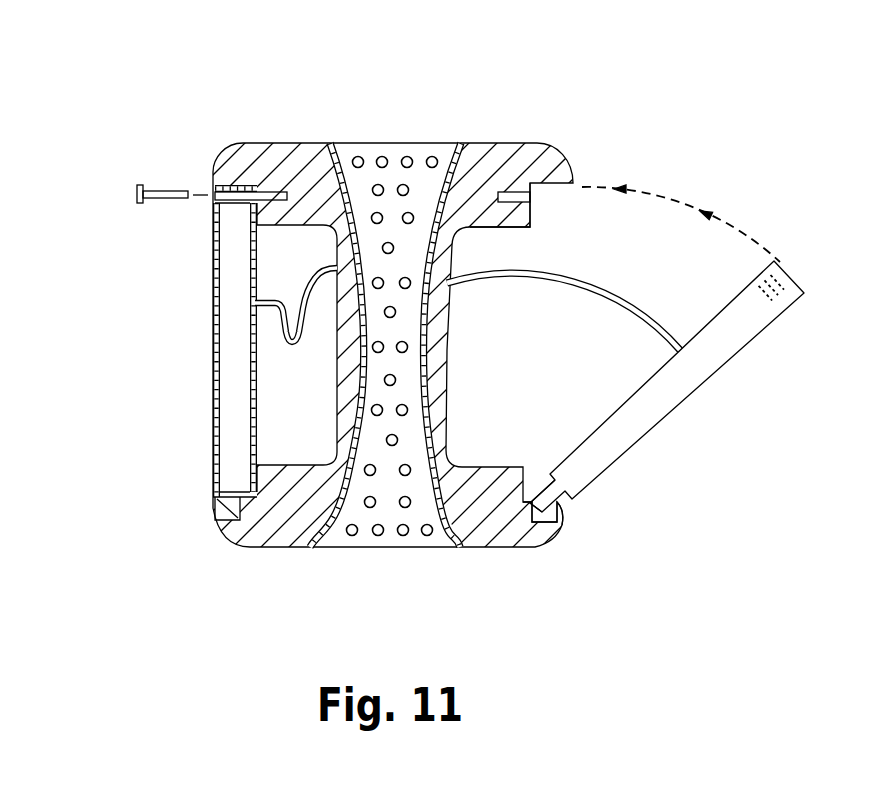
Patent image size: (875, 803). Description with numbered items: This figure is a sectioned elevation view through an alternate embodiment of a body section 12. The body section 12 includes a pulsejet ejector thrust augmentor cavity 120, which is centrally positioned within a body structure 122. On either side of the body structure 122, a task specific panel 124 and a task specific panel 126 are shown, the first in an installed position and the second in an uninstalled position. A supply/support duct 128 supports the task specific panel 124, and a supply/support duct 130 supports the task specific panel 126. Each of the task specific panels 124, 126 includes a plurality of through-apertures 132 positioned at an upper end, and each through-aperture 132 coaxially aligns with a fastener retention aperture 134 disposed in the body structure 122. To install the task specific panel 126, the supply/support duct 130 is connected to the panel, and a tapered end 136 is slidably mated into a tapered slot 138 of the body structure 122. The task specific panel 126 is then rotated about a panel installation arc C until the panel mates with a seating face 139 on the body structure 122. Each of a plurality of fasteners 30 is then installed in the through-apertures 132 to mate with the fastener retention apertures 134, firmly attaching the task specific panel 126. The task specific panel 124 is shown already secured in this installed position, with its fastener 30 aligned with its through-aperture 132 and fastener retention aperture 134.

The body section 12 is at (292, 115).
The fastener 30 is at (152, 184).
The pulsejet ejector thrust augmentor cavity 120 is at (393, 170).
The body structure 122 is at (227, 140).
The task specific panel 124 is at (210, 403).
The task specific panel 126 is at (673, 397).
The supply/support duct 128 is at (302, 288).
The supply/support duct 130 is at (540, 283).
The through-aperture 132 is at (778, 283).
The fastener retention aperture 134 is at (515, 192).
The tapered end 136 is at (545, 488).
The tapered slot 138 is at (548, 518).
The seating face 139 is at (532, 214).
The panel installation arc C is at (668, 196).